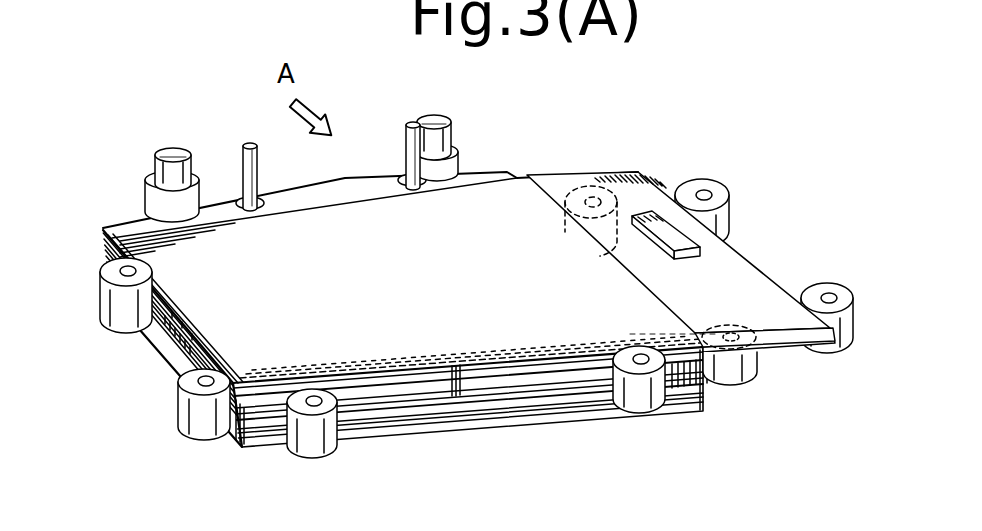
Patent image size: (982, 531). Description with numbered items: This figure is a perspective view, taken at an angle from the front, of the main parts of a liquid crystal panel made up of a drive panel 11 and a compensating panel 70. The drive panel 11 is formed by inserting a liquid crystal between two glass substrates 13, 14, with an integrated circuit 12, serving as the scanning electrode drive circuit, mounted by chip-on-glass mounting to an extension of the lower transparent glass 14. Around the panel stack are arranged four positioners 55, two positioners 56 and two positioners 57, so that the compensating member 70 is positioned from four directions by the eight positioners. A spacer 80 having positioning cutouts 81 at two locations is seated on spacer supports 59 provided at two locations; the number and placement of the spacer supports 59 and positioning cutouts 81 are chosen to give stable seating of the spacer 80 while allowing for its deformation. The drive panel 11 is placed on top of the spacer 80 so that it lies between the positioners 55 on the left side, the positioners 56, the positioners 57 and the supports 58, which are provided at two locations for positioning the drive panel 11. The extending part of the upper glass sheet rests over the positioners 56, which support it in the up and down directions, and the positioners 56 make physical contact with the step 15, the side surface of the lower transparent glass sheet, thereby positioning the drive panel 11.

The drive panel 11 is at (430, 388).
The integrated circuit 12 is at (700, 249).
The glass substrate 13 is at (518, 193).
The lower transparent glass 14 is at (763, 321).
The step 15 is at (570, 374).
The positioners 55 is at (590, 186).
The positioners 56 is at (310, 457).
The positioners 57 is at (178, 150).
The supports 58 is at (716, 189).
The spacer supports 59 is at (245, 163).
The compensating panel 70 is at (388, 440).
The spacer 80 is at (118, 226).
The positioning cutouts 81 is at (266, 197).